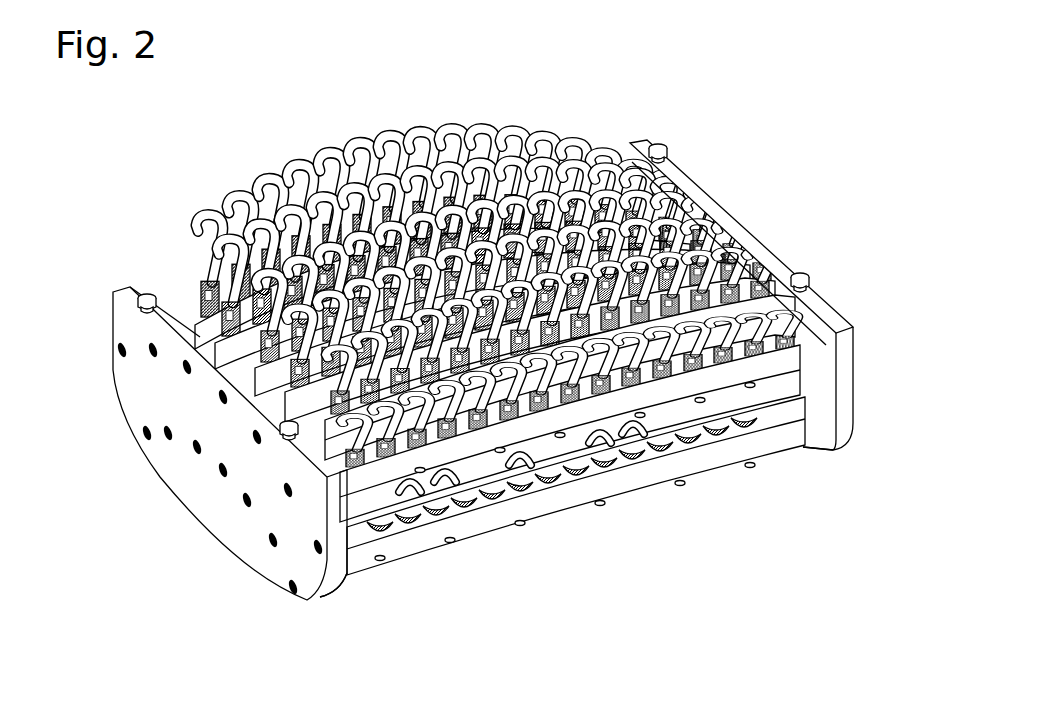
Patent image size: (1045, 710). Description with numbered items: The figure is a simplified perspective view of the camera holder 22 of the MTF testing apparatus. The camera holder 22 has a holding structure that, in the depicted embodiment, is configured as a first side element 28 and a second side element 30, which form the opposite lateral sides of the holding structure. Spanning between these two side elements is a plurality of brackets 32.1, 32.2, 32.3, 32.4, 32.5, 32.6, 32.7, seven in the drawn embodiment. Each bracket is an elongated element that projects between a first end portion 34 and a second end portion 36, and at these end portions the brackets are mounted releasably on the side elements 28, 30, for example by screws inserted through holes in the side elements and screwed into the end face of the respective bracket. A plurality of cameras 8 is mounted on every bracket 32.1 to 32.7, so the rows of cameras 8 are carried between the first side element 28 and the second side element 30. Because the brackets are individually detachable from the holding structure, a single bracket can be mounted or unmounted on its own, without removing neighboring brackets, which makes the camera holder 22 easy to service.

The camera holder 22 is at (752, 95).
The cameras 8 is at (634, 438).
The first side element 28 is at (232, 513).
The second side element 30 is at (750, 240).
The bracket 32.1 is at (790, 427).
The bracket 32.2 is at (777, 375).
The bracket 32.3 is at (760, 312).
The bracket 32.4 is at (268, 400).
The bracket 32.5 is at (277, 393).
The bracket 32.6 is at (200, 338).
The bracket 32.7 is at (197, 337).
The first end portion 34 is at (368, 590).
The second end portion 36 is at (805, 468).